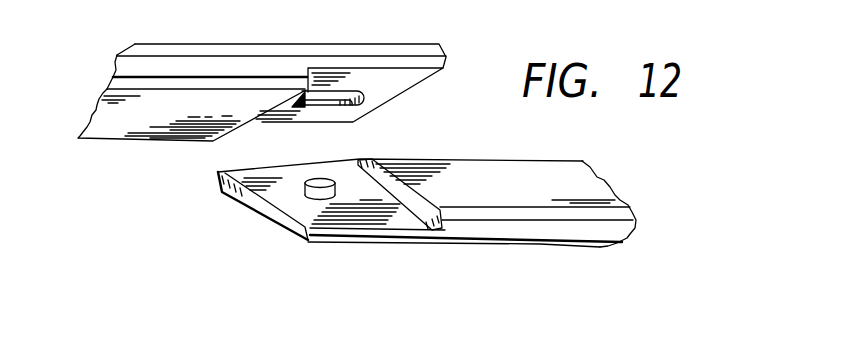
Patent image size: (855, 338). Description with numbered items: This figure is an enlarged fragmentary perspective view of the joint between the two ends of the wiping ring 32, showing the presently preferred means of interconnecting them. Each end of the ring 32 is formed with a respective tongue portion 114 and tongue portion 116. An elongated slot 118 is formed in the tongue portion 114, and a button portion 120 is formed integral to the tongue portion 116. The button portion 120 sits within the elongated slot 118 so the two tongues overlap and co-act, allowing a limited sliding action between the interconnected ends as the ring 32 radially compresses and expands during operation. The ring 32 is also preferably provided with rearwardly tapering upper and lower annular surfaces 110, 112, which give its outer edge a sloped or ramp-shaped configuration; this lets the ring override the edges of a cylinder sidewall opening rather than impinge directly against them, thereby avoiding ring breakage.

The upper annular surface 110 is at (124, 88).
The lower annular surface 112 is at (292, 50).
The tongue portion 114 is at (395, 83).
The elongated slot 118 is at (330, 100).
The tongue portion 116 is at (308, 215).
The button portion 120 is at (304, 186).
The wiping ring 32 is at (495, 177).